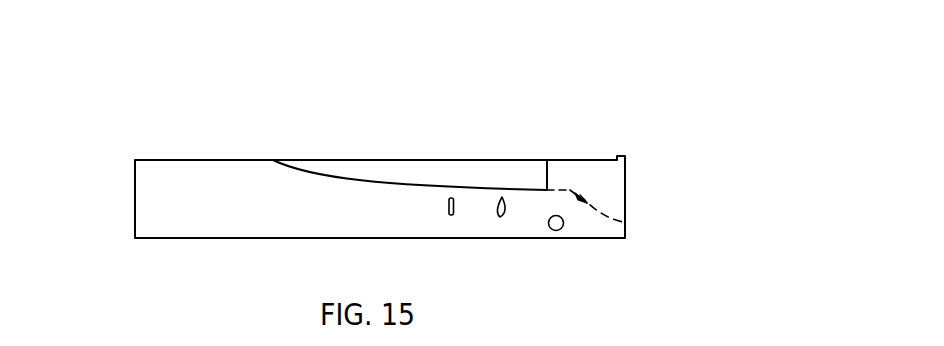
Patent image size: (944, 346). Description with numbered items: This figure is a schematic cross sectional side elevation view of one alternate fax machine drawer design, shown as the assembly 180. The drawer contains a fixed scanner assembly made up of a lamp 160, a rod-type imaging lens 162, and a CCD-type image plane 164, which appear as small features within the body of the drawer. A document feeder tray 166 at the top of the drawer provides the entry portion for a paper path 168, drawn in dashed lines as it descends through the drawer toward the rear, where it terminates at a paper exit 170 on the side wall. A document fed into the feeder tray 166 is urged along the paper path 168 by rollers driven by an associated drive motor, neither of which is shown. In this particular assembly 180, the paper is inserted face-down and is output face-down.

The assembly 180 is at (265, 124).
The document feeder tray 166 is at (395, 183).
The paper path 168 is at (570, 190).
The paper exit 170 is at (622, 222).
The CCD-type image plane 164 is at (450, 216).
The rod-type imaging lens 162 is at (500, 217).
The lamp 160 is at (557, 231).